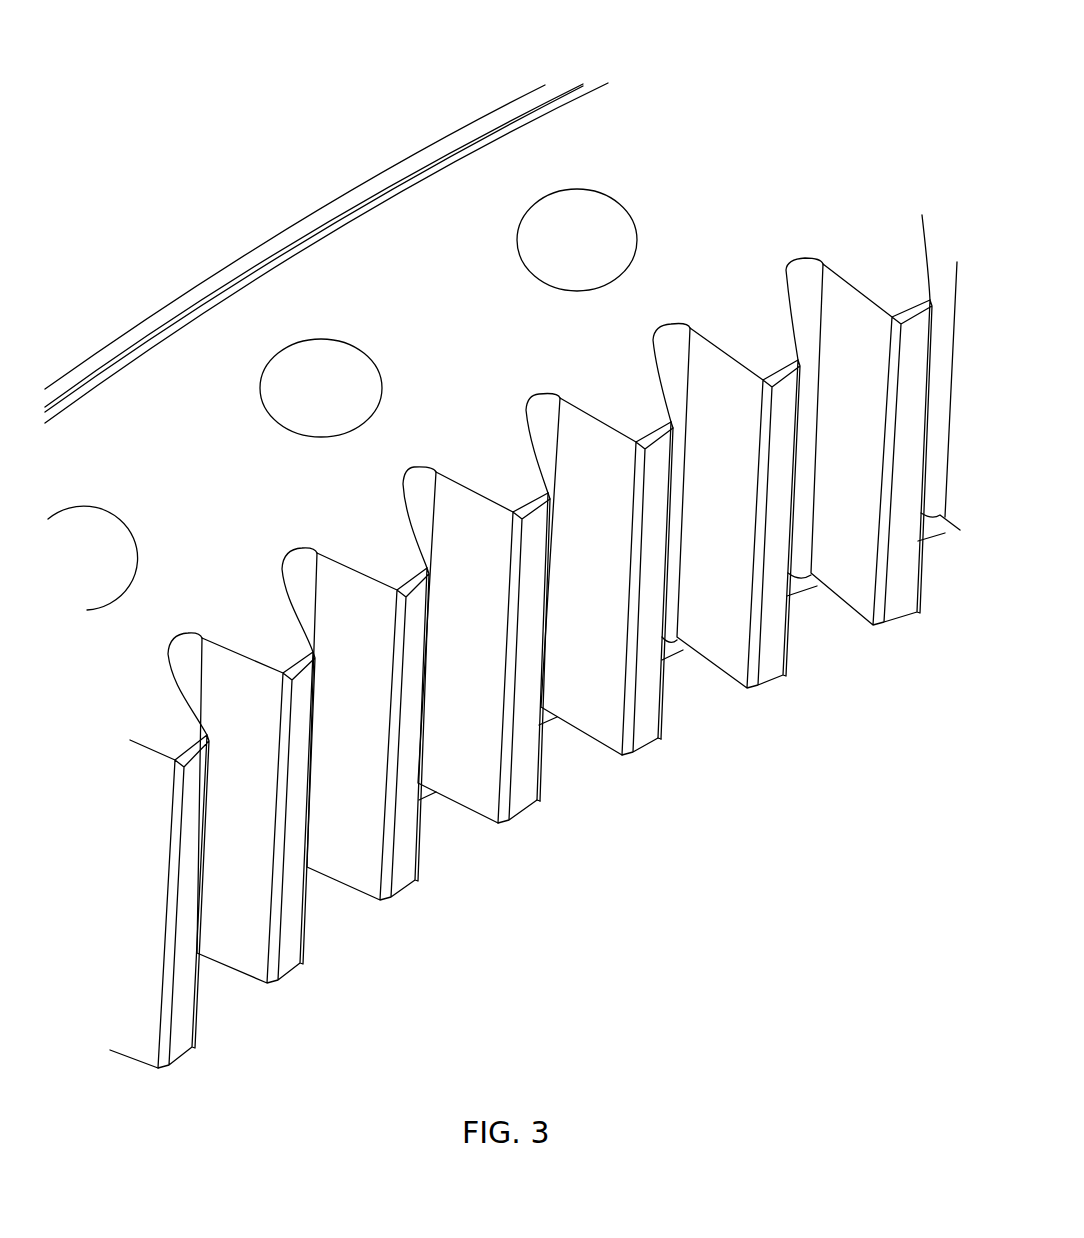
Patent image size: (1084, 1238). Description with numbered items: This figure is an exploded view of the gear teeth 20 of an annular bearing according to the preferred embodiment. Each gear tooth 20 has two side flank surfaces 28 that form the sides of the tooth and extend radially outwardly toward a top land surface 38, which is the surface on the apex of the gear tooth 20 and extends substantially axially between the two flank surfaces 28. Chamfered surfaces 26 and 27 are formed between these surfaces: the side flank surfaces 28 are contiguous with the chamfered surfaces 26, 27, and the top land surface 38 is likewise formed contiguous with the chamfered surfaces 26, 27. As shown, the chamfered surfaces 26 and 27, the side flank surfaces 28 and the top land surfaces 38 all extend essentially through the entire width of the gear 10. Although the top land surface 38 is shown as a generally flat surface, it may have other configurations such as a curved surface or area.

The gear 10 is at (748, 187).
The gear teeth 20 is at (504, 738).
The chamfered surface 26 is at (505, 812).
The chamfered surface 27 is at (537, 800).
The side flank surfaces 28 is at (577, 687).
The top land surface 38 is at (647, 722).